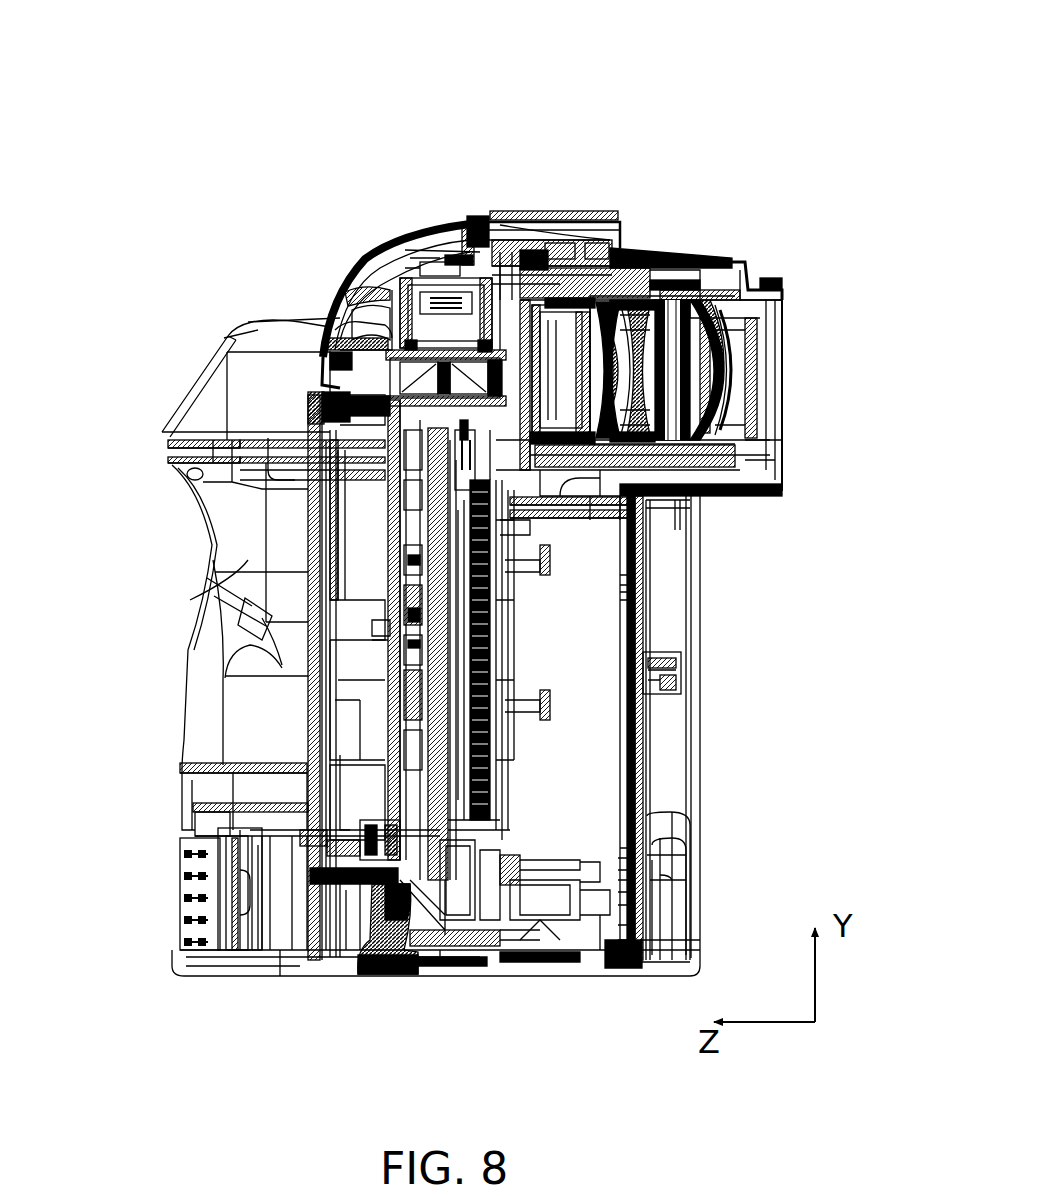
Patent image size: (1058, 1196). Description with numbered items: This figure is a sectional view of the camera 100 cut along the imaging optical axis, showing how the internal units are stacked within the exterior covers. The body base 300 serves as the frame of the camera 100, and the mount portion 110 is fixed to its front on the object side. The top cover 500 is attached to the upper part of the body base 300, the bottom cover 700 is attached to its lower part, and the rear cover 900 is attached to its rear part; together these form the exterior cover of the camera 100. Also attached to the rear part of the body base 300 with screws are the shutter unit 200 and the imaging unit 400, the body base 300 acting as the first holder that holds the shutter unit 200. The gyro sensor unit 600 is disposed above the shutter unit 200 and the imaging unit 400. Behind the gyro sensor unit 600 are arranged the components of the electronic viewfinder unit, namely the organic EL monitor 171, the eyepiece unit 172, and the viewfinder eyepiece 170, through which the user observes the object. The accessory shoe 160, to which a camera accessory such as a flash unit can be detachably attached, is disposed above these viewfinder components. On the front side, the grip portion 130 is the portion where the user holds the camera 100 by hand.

The camera 100 is at (696, 92).
The mount portion 110 is at (307, 687).
The grip portion 130 is at (224, 544).
The accessory shoe 160 is at (518, 214).
The viewfinder eyepiece 170 is at (747, 347).
The organic EL monitor 171 is at (552, 353).
The eyepiece unit 172 is at (698, 330).
The shutter unit 200 is at (407, 683).
The body base 300 is at (360, 508).
The imaging unit 400 is at (492, 745).
The top cover 500 is at (415, 238).
The gyro sensor unit 600 is at (393, 283).
The bottom cover 700 is at (227, 957).
The rear cover 900 is at (663, 627).